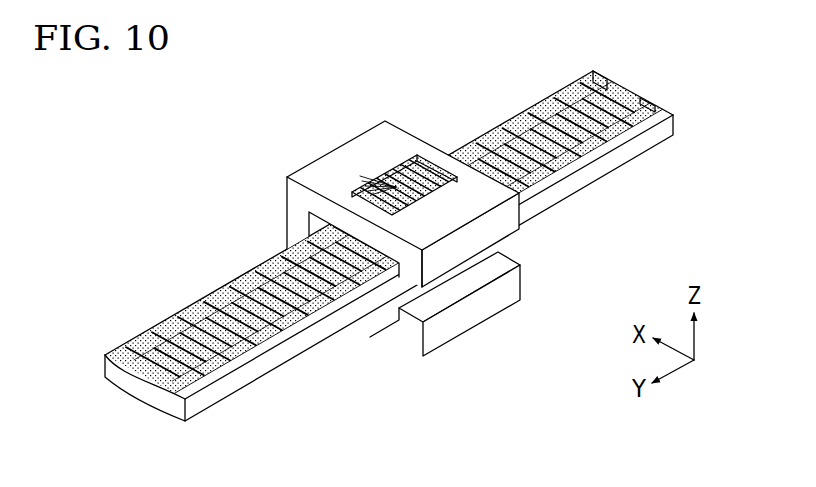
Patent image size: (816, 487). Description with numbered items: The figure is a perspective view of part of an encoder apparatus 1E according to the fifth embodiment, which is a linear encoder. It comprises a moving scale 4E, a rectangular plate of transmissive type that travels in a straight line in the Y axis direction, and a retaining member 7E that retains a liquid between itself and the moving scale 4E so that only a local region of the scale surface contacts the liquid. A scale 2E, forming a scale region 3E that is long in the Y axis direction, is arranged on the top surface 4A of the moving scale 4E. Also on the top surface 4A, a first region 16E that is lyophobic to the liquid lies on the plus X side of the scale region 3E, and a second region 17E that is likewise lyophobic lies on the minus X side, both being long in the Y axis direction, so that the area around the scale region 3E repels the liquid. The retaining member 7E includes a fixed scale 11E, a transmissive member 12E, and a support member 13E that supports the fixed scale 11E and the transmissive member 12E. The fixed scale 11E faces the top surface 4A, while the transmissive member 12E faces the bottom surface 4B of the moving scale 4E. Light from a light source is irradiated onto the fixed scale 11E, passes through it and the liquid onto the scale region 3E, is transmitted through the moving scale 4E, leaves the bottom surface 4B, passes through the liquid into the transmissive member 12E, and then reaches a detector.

The encoder apparatus 1E is at (431, 99).
The scale 2E is at (600, 138).
The scale region 3E is at (614, 83).
The moving scale 4E is at (529, 98).
The top surface 4A is at (468, 145).
The bottom surface 4B is at (543, 218).
The retaining member 7E is at (404, 123).
The fixed scale 11E is at (394, 180).
The transmissive member 12E is at (370, 340).
The support member 13E is at (307, 175).
The first region 16E is at (600, 68).
The second region 17E is at (648, 102).